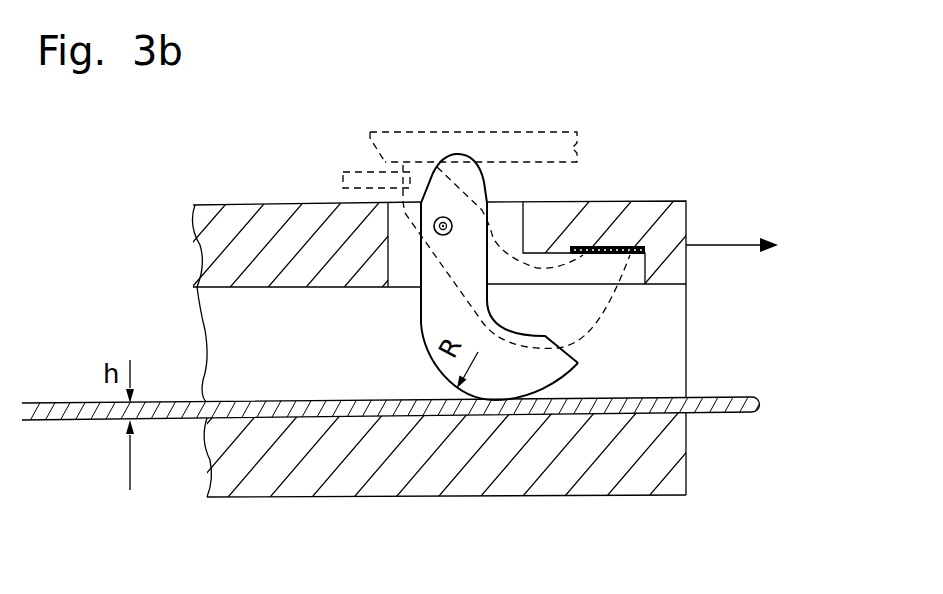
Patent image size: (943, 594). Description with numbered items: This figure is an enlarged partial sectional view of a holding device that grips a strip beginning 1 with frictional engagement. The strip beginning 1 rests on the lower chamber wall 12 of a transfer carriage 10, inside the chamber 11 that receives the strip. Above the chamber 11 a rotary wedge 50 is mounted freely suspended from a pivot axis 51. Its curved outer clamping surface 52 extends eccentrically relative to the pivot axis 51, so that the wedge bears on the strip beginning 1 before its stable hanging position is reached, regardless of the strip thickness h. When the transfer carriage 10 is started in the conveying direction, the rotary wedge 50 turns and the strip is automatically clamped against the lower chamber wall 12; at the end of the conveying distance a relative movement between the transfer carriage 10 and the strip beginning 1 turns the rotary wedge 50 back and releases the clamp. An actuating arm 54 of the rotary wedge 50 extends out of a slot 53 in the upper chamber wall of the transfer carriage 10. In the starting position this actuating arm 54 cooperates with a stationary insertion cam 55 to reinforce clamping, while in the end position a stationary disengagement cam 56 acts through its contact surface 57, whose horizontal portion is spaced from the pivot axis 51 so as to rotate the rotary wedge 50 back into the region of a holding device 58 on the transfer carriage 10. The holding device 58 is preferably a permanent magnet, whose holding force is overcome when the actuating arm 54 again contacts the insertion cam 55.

The strip beginning 1 is at (148, 408).
The transfer carriage 10 is at (240, 254).
The chamber 11 is at (316, 382).
The lower chamber wall 12 is at (567, 470).
The rotary wedge 50 is at (430, 322).
The pivot axis 51 is at (438, 236).
The curved outer clamping surface 52 is at (452, 383).
The slot 53 is at (503, 220).
The actuating arm 54 is at (448, 190).
The insertion cam 55 is at (362, 178).
The disengagement cam 56 is at (543, 148).
The contact surface 57 is at (377, 148).
The holding device 58 is at (630, 257).